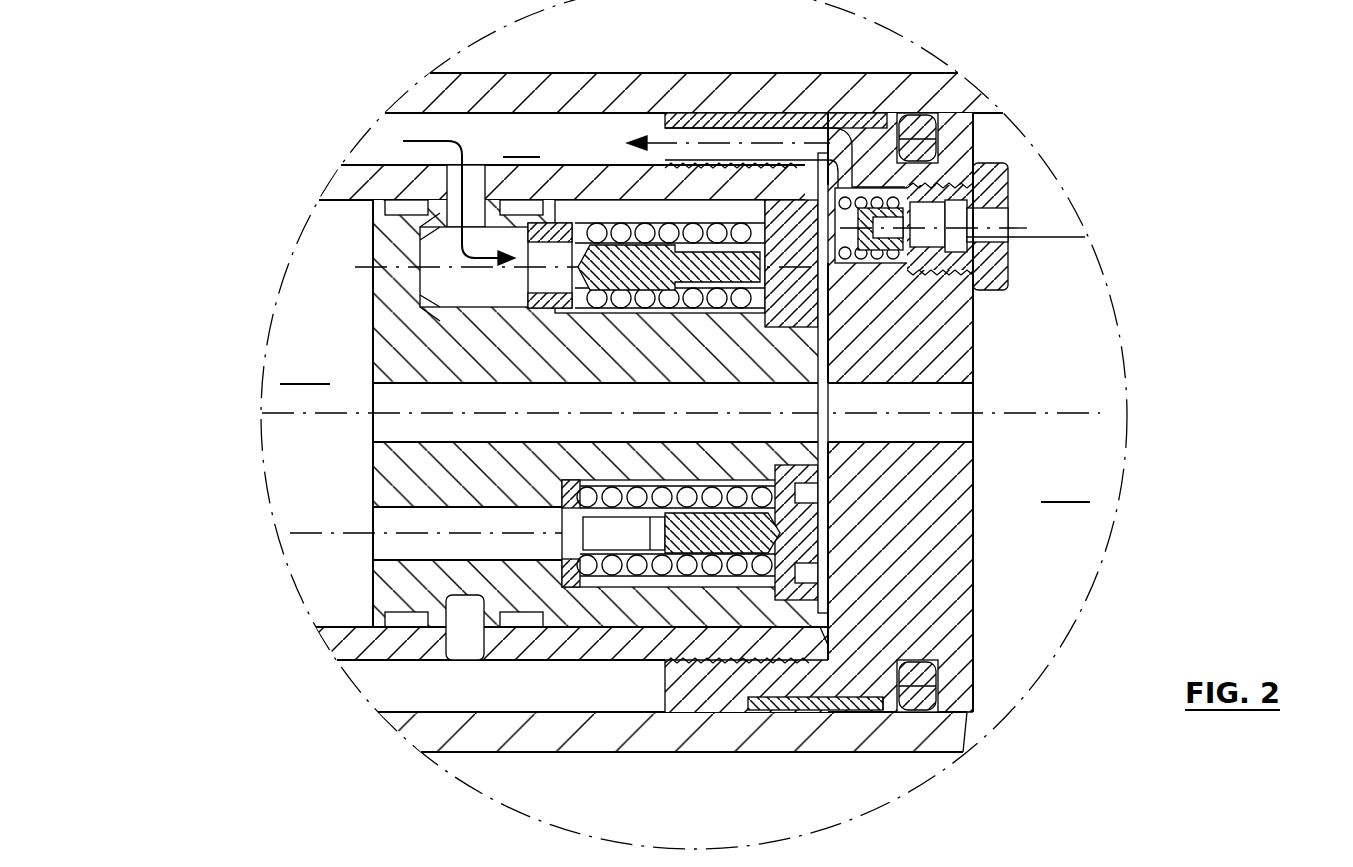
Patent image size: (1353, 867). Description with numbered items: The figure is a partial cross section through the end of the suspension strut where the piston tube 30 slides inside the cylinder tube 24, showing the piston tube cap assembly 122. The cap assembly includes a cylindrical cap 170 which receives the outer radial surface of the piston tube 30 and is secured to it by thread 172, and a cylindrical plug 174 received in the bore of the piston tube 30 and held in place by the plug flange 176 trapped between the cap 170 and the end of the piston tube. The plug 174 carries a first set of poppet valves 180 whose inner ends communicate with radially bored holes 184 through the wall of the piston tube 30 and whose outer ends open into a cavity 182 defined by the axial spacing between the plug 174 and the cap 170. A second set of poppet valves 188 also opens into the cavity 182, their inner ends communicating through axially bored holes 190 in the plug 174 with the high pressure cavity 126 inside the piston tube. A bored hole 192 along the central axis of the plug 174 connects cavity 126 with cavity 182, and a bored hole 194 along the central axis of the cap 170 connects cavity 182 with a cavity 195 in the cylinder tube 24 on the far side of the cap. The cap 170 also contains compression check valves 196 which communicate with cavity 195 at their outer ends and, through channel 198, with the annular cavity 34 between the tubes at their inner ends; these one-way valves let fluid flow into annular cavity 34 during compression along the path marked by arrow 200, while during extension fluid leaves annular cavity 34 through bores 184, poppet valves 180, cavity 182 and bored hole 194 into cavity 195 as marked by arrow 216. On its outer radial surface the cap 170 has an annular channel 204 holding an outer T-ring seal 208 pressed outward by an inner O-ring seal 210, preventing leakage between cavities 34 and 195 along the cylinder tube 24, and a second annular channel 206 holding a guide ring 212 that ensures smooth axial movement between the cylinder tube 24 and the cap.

The second annular cavity 34 is at (383, 133).
The arrow 216 is at (443, 140).
The radially bored holes 184 is at (493, 160).
The arrow 200 is at (643, 78).
The channel 198 is at (838, 78).
The piston tube cap assembly 122 is at (314, 338).
The cavity 126 is at (549, 293).
The bored hole 192 is at (385, 427).
The cylindrical plug 174 is at (372, 463).
The axially bored holes 190 is at (500, 520).
The piston tube 30 is at (345, 640).
The cylinder tube 24 is at (430, 731).
The poppet valves 180 is at (615, 305).
The cavity 182 is at (830, 380).
The bored hole 194 is at (958, 396).
The cavity 195 is at (826, 532).
The compression check valves 196 is at (897, 177).
The cylindrical cap 170 is at (962, 539).
The plug flange 176 is at (822, 645).
The annular channel 204 is at (940, 660).
The inner O-ring seal 210 is at (963, 705).
The outer T-ring seal 208 is at (925, 708).
The guide ring 212 is at (848, 705).
The annular channel 206 is at (783, 700).
The thread 172 is at (722, 655).
The poppet valves 188 is at (647, 580).